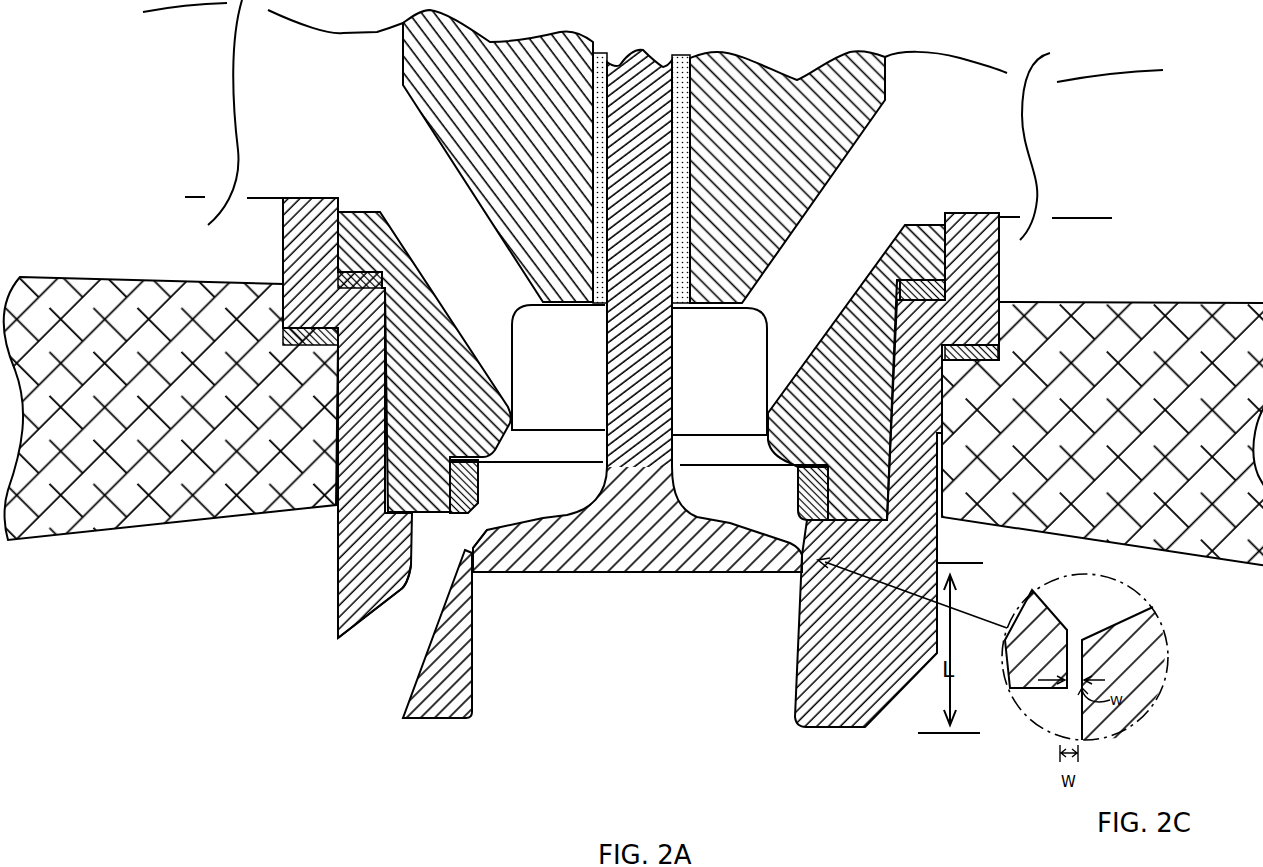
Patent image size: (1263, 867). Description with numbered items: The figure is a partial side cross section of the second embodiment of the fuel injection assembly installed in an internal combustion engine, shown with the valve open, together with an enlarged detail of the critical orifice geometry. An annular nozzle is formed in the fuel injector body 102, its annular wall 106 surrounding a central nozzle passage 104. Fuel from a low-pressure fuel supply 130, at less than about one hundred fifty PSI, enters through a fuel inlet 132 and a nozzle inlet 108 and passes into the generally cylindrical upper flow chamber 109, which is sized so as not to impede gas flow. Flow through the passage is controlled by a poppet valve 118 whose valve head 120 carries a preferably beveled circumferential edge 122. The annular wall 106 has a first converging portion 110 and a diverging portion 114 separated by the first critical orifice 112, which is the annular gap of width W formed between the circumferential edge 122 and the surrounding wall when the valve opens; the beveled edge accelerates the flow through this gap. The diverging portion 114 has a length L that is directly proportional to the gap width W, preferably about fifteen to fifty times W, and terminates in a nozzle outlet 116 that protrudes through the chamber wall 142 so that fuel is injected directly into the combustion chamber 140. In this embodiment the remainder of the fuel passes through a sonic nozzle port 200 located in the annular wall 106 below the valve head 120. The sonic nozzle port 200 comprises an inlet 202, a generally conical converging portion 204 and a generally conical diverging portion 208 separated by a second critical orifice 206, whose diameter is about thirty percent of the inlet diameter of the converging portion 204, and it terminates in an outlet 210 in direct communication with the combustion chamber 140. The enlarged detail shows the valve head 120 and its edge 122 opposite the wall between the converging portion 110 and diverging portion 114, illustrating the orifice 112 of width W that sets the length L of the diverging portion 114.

In FIG. 2A, the fuel injector body 102 is at (378, 403).
In FIG. 2A, the central nozzle passage 104 is at (637, 364).
In FIG. 2A, the annular wall 106 is at (512, 446).
In FIG. 2A, the nozzle inlet 108 is at (478, 270).
In FIG. 2A, the upper flow chamber 109 is at (582, 387).
In FIG. 2A, the converging portion 110 is at (545, 508).
In FIG. 2C, the converging portion 110 is at (1093, 610).
In FIG. 2C, the first critical orifice 112 is at (1157, 637).
In FIG. 2A, the diverging portion 114 is at (645, 677).
In FIG. 2C, the diverging portion 114 is at (1053, 723).
In FIG. 2A, the nozzle outlet 116 is at (533, 732).
In FIG. 2A, the poppet valve 118 is at (662, 292).
In FIG. 2A, the valve head 120 is at (660, 548).
In FIG. 2C, the valve head 120 is at (1040, 628).
In FIG. 2A, the circumferential edge 122 is at (482, 552).
In FIG. 2C, the circumferential edge 122 is at (1063, 645).
In FIG. 2A, the fuel supply 130 is at (140, 111).
In FIG. 2A, the fuel inlet 132 is at (318, 127).
In FIG. 2A, the combustion chamber 140 is at (634, 759).
In FIG. 2A, the chamber wall 142 is at (205, 412).
In FIG. 2A, the sonic nozzle port 200 is at (318, 620).
In FIG. 2A, the inlet 202 is at (468, 538).
In FIG. 2A, the converging portion 204 is at (444, 576).
In FIG. 2A, the second critical orifice 206 is at (405, 592).
In FIG. 2A, the diverging portion 208 is at (408, 649).
In FIG. 2A, the outlet 210 is at (355, 722).